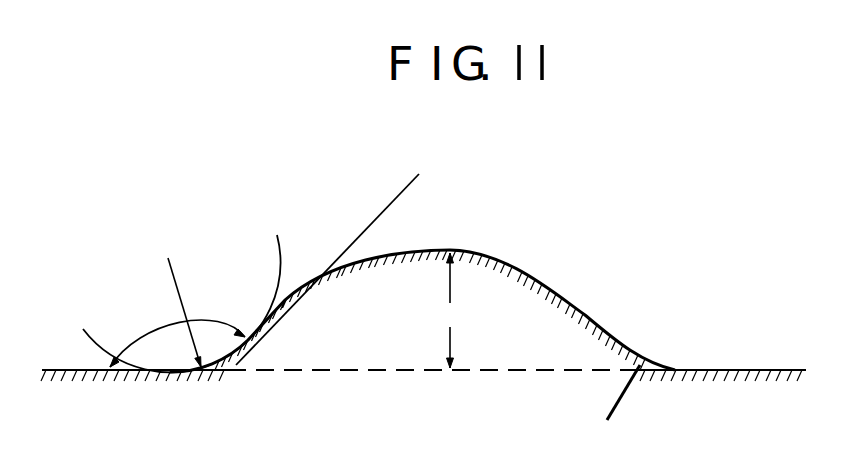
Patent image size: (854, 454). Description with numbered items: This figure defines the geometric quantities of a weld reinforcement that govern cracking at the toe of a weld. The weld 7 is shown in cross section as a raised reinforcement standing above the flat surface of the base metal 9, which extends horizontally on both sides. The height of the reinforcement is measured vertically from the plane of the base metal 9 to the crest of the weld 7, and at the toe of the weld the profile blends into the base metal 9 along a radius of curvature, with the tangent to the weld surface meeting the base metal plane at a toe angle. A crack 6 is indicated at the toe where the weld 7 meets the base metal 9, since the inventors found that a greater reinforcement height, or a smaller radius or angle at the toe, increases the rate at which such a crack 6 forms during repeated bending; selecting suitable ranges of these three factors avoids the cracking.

The crack 6 is at (622, 403).
The weld 7 is at (379, 295).
The base metal 9 is at (423, 396).